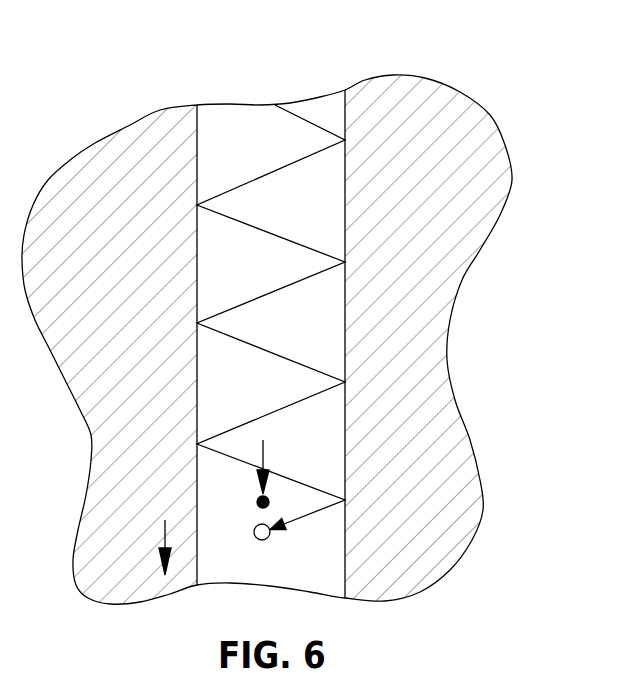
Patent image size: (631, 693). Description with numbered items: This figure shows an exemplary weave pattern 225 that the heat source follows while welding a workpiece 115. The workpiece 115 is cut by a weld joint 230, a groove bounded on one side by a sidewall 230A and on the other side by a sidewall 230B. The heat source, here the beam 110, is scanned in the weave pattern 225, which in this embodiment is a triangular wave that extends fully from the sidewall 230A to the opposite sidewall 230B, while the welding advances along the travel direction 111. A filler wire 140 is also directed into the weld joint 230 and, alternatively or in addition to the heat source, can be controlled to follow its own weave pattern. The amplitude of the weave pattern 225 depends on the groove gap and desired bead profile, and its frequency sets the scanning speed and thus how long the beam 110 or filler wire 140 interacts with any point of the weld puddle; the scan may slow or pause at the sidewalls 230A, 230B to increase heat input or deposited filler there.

The laser beam 110 is at (272, 540).
The travel direction 111 is at (166, 537).
The workpiece 115 is at (460, 187).
The filler wire 140 is at (270, 498).
The weave pattern 225 is at (290, 405).
The weld joint 230 is at (285, 306).
The sidewall 230A is at (345, 333).
The sidewall 230B is at (197, 400).